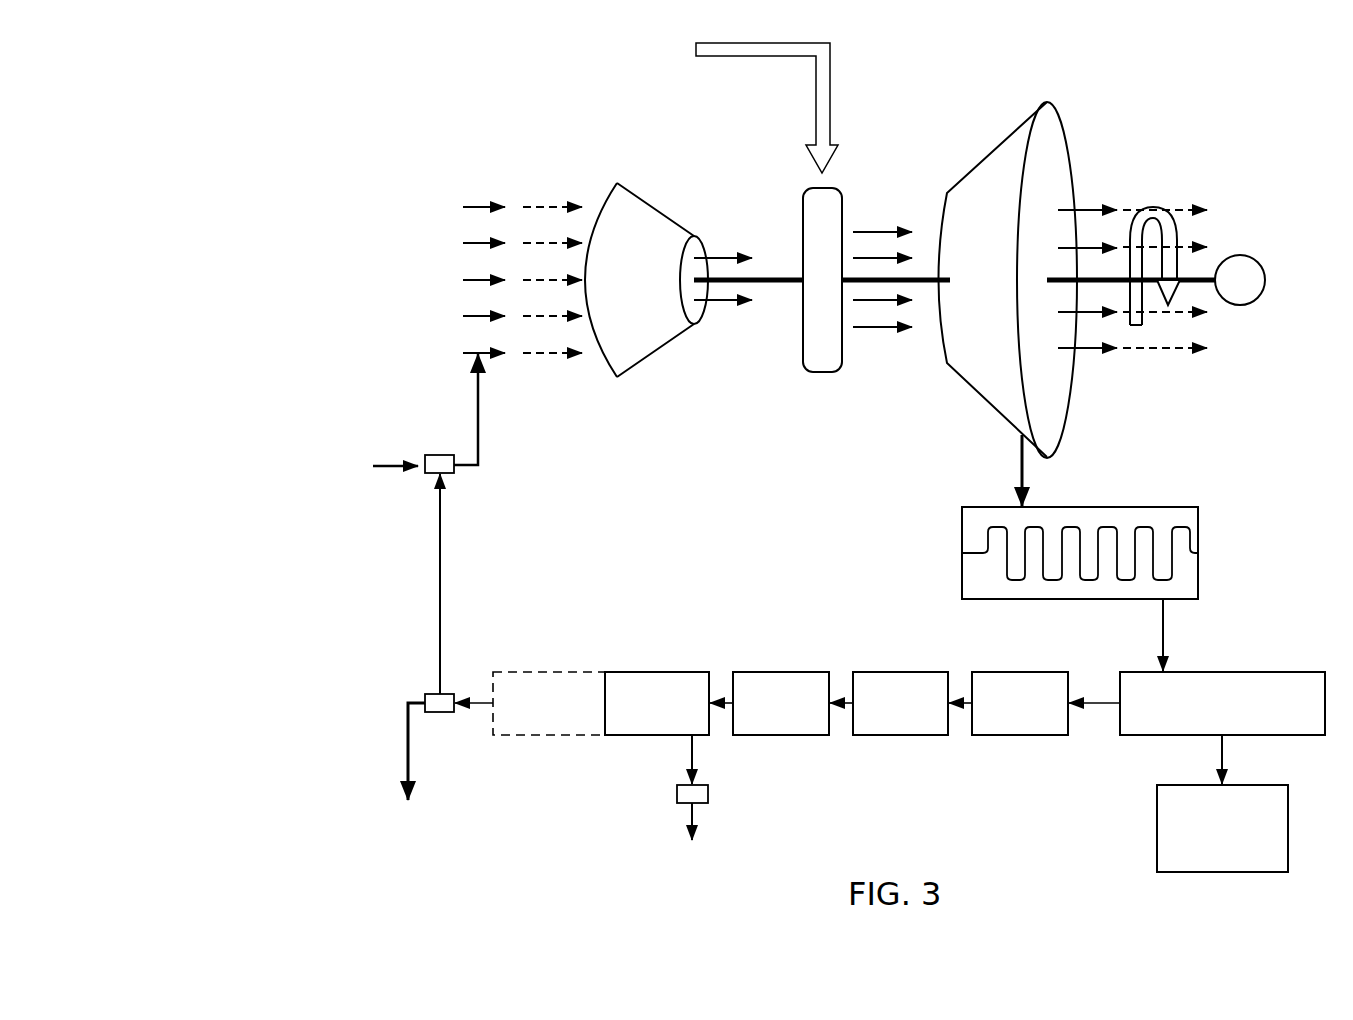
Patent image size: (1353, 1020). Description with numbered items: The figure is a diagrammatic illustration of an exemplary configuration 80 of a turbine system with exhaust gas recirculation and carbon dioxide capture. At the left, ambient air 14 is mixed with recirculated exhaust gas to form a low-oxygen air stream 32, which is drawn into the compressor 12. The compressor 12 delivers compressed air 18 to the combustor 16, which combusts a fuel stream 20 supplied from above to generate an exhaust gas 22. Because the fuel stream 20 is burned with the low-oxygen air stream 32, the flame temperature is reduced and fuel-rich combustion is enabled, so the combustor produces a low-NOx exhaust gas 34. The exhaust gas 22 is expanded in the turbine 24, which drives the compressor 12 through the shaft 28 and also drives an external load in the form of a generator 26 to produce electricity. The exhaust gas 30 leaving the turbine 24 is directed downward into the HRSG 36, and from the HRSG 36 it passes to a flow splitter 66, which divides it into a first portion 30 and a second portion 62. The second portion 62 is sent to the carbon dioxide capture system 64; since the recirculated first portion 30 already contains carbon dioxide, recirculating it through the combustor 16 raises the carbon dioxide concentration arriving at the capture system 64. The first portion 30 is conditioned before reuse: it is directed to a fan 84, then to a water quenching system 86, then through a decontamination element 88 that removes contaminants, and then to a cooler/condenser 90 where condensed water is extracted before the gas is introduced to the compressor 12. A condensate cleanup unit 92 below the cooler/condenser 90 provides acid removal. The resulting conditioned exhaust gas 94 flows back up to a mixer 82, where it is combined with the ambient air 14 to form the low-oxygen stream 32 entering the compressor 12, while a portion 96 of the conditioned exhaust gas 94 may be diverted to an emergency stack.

The exemplary configuration 80 is at (290, 118).
The ambient air 14 is at (478, 205).
The low-oxygen air stream 32 is at (551, 205).
The compressor 12 is at (658, 205).
The compressed air 18 is at (715, 302).
The combustor 16 is at (842, 212).
The fuel stream 20 is at (763, 57).
The exhaust gas 22 is at (875, 329).
The shaft 28 is at (940, 270).
The turbine 24 is at (1063, 135).
The first portion of the exhaust gas 30 is at (1083, 208).
The low-NOx exhaust gas 34 is at (1170, 208).
The generator 26 is at (1258, 256).
The HRSG 36 is at (1175, 505).
The second portion of the exhaust gas 62 is at (1167, 628).
The flow splitter 66 is at (1272, 672).
The carbon dioxide capture system 64 is at (1290, 826).
The fan 84 is at (1013, 672).
The water quenching system 86 is at (893, 672).
The decontamination element 88 is at (774, 672).
The cooler/condenser 90 is at (656, 672).
The condensate cleanup unit 92 is at (708, 792).
The conditioned exhaust gas 94 is at (440, 566).
The portion of the conditioned exhaust gas 96 is at (408, 750).
The mixer 82 is at (440, 455).